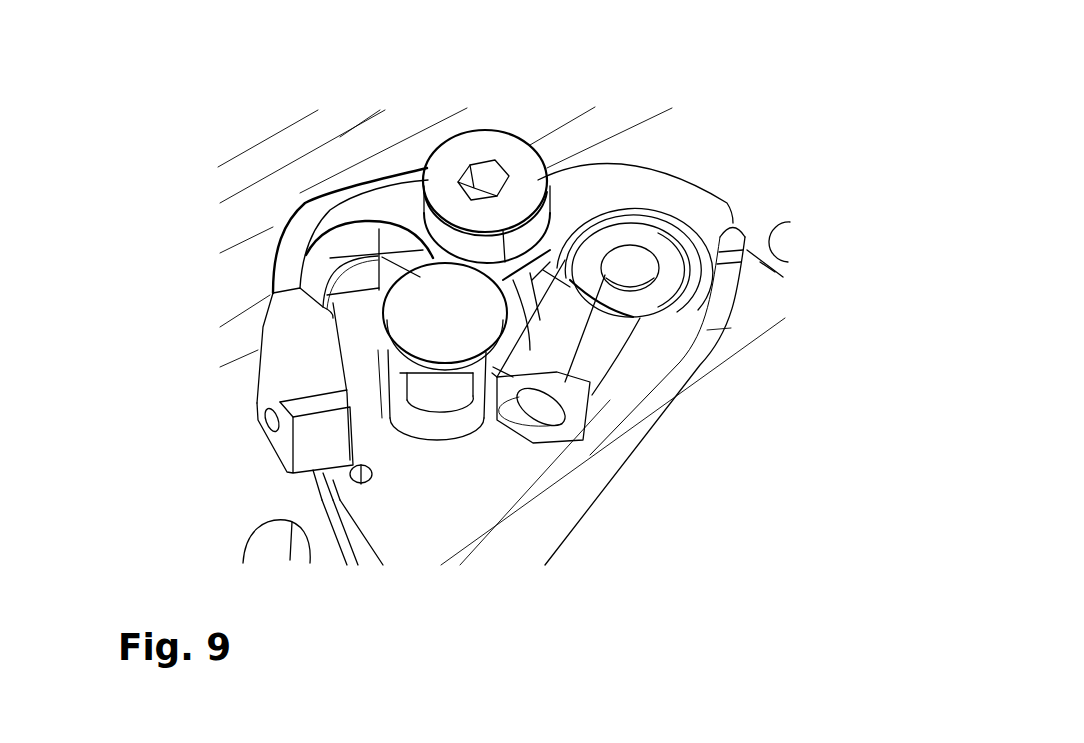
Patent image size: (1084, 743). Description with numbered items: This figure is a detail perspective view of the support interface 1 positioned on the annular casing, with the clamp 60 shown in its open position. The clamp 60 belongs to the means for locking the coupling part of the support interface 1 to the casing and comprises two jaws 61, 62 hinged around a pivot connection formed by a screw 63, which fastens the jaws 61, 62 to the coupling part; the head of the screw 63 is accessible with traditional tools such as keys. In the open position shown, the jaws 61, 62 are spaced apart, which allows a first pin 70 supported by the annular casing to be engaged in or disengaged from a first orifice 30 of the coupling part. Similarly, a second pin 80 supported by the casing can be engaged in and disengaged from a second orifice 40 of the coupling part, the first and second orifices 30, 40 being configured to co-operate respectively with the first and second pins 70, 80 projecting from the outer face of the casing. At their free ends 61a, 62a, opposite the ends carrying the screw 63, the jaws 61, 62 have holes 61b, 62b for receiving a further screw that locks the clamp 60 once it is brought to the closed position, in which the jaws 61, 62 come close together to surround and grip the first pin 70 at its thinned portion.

The support interface 1 is at (483, 488).
The first orifice 30 is at (378, 378).
The second orifice 40 is at (700, 243).
The clamp 60 is at (398, 188).
The jaw 61 is at (308, 234).
The free end of jaw 61a is at (300, 385).
The hole 61b is at (267, 413).
The jaw 62 is at (557, 338).
The free end of jaw 62a is at (563, 402).
The hole 62b is at (547, 405).
The screw 63 is at (517, 163).
The first pin 70 is at (446, 337).
The second pin 80 is at (642, 235).